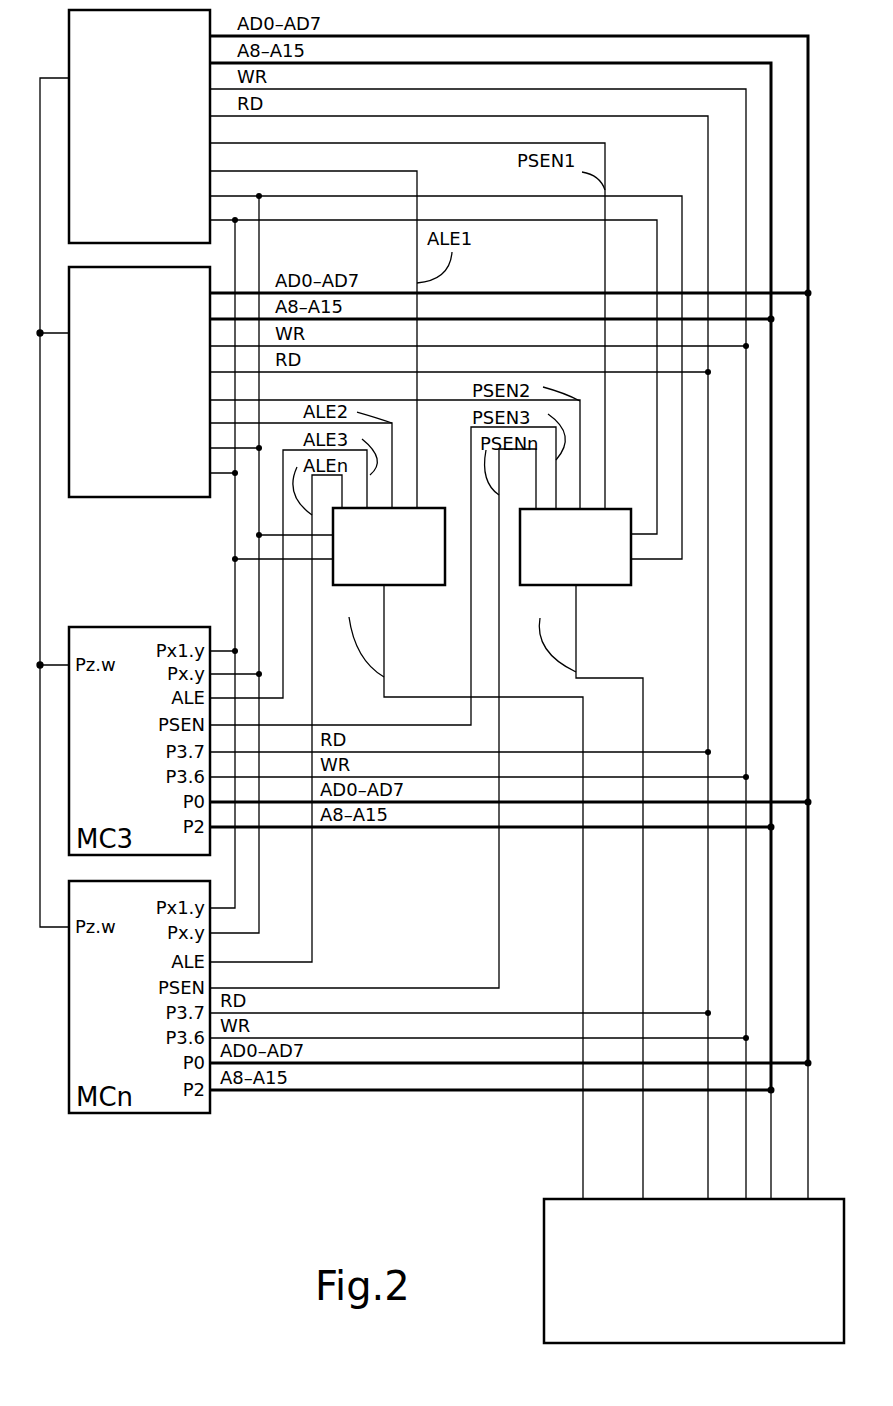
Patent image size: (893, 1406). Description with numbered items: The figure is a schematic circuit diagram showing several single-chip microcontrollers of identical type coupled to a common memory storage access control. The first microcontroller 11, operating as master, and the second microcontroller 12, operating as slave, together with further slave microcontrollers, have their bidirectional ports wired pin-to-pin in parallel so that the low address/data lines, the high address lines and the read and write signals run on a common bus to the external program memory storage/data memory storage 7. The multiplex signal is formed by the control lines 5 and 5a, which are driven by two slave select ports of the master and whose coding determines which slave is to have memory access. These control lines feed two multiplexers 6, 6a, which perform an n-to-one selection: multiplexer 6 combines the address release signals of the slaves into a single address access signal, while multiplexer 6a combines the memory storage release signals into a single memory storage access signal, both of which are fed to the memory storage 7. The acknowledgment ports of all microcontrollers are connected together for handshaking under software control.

The first microcontroller 11 is at (69, 50).
The second microcontroller 12 is at (97, 463).
The control line 5 is at (259, 262).
The control line 5a is at (235, 262).
The multiplexer 6 is at (412, 561).
The multiplexer 6a is at (605, 565).
The external program memory storage/data memory storage 7 is at (578, 1312).